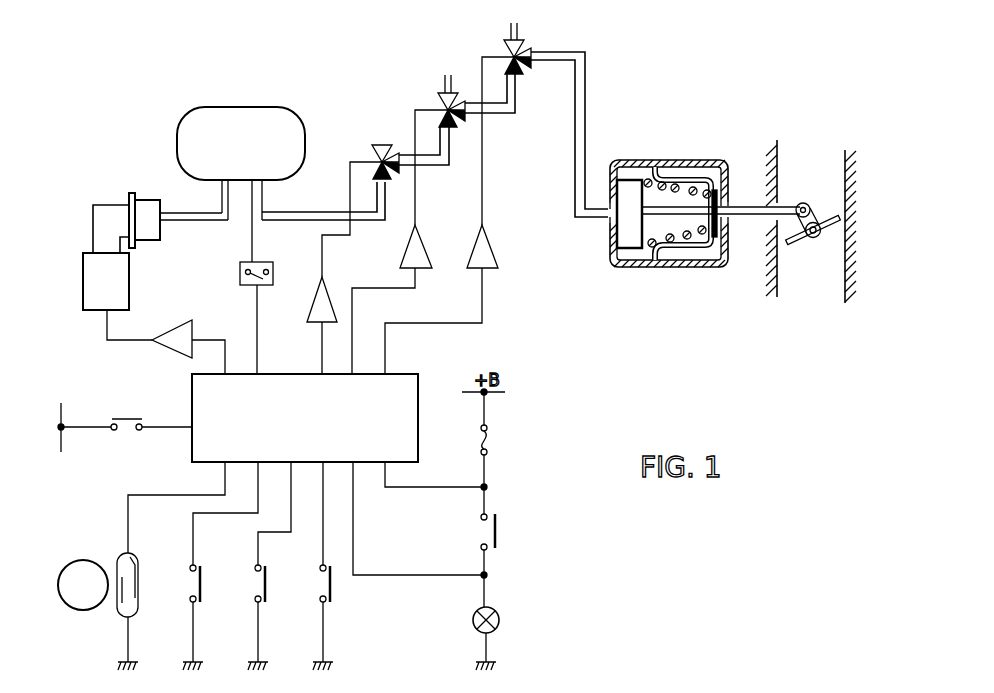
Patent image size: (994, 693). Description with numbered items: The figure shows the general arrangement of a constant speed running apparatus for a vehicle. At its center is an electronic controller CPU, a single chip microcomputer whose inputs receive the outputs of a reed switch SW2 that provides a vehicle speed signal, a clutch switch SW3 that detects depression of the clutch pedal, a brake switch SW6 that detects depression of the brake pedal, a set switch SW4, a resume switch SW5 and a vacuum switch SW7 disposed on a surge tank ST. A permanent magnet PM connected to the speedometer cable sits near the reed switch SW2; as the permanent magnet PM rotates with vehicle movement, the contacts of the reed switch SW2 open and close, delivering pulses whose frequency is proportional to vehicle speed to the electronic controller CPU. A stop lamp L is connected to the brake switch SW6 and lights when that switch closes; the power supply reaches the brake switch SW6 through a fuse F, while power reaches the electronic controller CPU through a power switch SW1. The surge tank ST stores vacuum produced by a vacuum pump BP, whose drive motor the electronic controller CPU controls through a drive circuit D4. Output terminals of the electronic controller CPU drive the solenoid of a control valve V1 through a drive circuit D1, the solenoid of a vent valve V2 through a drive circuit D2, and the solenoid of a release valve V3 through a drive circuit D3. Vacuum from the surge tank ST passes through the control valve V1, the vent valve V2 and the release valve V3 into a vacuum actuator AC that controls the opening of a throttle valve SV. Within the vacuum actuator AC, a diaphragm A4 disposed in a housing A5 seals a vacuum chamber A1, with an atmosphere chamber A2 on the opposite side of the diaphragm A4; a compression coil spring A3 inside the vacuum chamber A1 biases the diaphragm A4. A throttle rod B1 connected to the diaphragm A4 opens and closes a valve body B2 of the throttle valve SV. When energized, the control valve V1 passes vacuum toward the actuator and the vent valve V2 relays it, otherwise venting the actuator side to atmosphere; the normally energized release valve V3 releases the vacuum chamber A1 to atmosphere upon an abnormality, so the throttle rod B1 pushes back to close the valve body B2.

The surge tank ST is at (283, 90).
The vacuum pump BP is at (89, 281).
The vacuum switch SW7 is at (245, 307).
The control valve V1 is at (385, 151).
The vent valve V2 is at (451, 89).
The release valve V3 is at (528, 44).
The drive circuit D1 is at (339, 268).
The drive circuit D2 is at (401, 242).
The drive circuit D3 is at (451, 215).
The drive circuit D4 is at (166, 340).
The electronic controller CPU is at (305, 418).
The power switch SW1 is at (111, 424).
The permanent magnet PM is at (83, 572).
The reed switch SW2 is at (145, 611).
The clutch switch SW3 is at (213, 617).
The set switch SW4 is at (277, 617).
The resume switch SW5 is at (343, 617).
The fuse F is at (493, 440).
The brake switch SW6 is at (510, 532).
The stop lamp L is at (495, 638).
The vacuum actuator AC is at (570, 275).
The vacuum chamber A1 is at (660, 207).
The atmosphere chamber A2 is at (718, 177).
The compression coil spring A3 is at (690, 177).
The diaphragm A4 is at (670, 256).
The housing A5 is at (727, 267).
The throttle rod B1 is at (748, 207).
The valve body B2 is at (831, 212).
The throttle valve SV is at (812, 293).